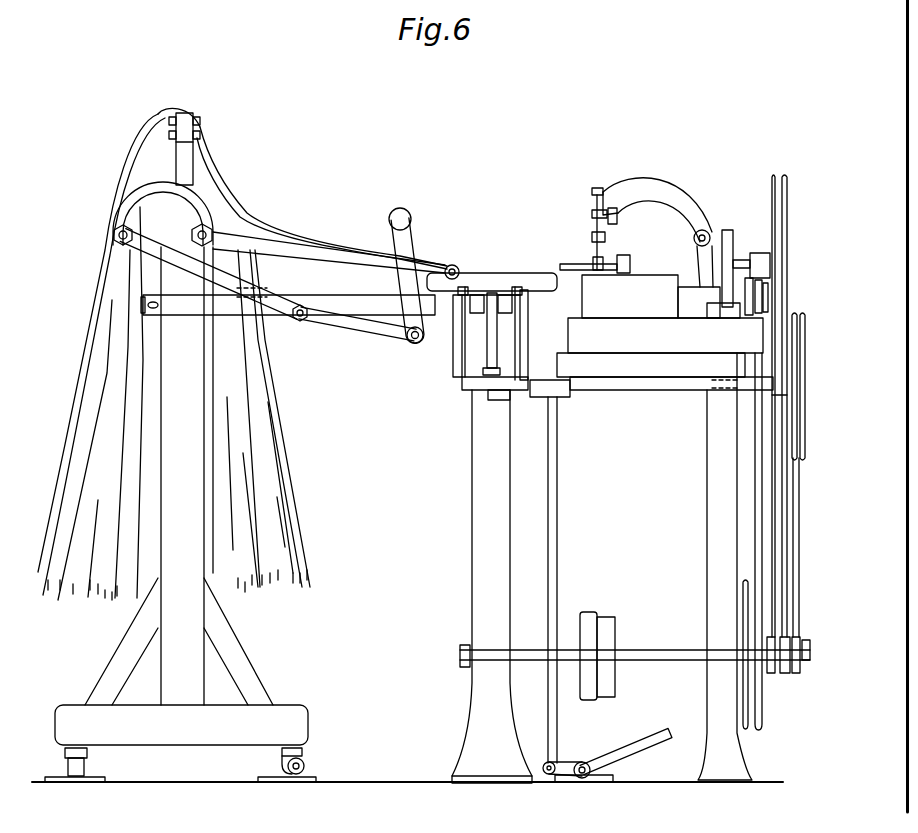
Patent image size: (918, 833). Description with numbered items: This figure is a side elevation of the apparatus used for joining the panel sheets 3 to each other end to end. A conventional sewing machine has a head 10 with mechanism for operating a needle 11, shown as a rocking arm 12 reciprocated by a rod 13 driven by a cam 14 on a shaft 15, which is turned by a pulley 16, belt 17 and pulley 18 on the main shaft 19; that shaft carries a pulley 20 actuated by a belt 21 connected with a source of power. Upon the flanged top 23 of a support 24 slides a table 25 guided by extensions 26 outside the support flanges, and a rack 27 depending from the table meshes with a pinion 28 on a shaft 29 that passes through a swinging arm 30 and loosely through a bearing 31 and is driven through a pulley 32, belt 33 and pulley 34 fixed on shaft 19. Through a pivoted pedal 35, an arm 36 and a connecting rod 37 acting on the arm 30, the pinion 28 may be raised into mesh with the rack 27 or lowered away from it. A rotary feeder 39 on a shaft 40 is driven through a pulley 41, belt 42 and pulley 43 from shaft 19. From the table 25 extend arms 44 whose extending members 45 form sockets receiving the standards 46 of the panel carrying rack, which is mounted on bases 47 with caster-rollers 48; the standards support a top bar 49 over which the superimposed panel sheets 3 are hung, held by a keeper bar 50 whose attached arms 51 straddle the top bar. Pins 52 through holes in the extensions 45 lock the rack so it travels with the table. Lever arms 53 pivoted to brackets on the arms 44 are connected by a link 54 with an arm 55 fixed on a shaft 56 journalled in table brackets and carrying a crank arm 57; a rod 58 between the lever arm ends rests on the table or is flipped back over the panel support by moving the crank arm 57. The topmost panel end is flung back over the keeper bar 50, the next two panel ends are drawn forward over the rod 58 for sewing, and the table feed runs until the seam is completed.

The panel sheet 3 is at (288, 588).
The head 10 is at (657, 197).
The needle 11 is at (603, 273).
The rocking arm 12 is at (673, 217).
The rod 13 is at (728, 238).
The cam 14 is at (720, 297).
The shaft 15 is at (742, 303).
The pulley 16 is at (753, 315).
The belt 17 is at (755, 365).
The pulley 18 is at (745, 595).
The shaft 19 is at (687, 644).
The pulley 20 is at (580, 620).
The belt 21 is at (594, 615).
The flanged top 23 is at (468, 386).
The support 24 is at (492, 586).
The table 25 is at (540, 288).
The extension 26 is at (453, 377).
The rack 27 is at (488, 362).
The pinion 28 is at (497, 400).
The shaft 29 is at (610, 391).
The swinging arm 30 is at (543, 397).
The bearing 31 is at (713, 390).
The pulley 32 is at (806, 392).
The belt 33 is at (799, 527).
The pulley 34 is at (801, 638).
The pivoted pedal 35 is at (650, 737).
The arm 36 is at (585, 750).
The connecting rod 37 is at (557, 522).
The rotary feeder 39 is at (590, 258).
The shaft 40 is at (657, 267).
The pulley 41 is at (787, 233).
The belt 42 is at (777, 523).
The pulley 43 is at (787, 673).
The arm 44 is at (289, 305).
The extending member 45 is at (170, 306).
The standard 46 is at (182, 476).
The base 47 is at (181, 725).
The caster-roller 48 is at (84, 766).
The top bar 49 is at (180, 170).
The keeper bar 50 is at (192, 114).
The arm 51 is at (185, 146).
The pin 52 is at (143, 306).
The lever arm 53 is at (317, 259).
The link 54 is at (200, 267).
The arm 55 is at (354, 323).
The shaft 56 is at (407, 345).
The crank arm 57 is at (408, 247).
The rod 58 is at (460, 266).